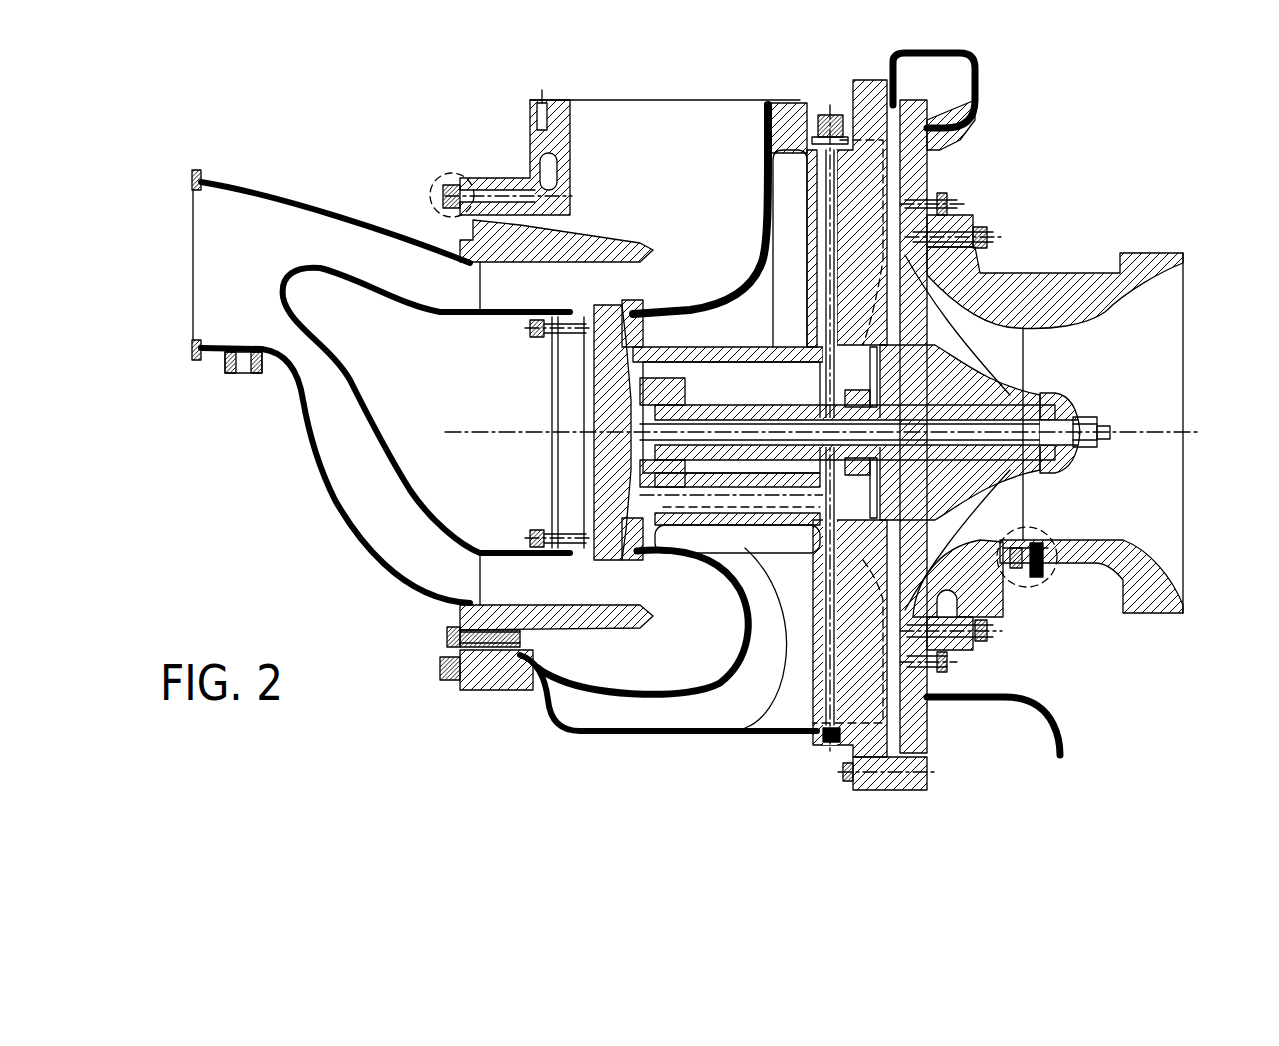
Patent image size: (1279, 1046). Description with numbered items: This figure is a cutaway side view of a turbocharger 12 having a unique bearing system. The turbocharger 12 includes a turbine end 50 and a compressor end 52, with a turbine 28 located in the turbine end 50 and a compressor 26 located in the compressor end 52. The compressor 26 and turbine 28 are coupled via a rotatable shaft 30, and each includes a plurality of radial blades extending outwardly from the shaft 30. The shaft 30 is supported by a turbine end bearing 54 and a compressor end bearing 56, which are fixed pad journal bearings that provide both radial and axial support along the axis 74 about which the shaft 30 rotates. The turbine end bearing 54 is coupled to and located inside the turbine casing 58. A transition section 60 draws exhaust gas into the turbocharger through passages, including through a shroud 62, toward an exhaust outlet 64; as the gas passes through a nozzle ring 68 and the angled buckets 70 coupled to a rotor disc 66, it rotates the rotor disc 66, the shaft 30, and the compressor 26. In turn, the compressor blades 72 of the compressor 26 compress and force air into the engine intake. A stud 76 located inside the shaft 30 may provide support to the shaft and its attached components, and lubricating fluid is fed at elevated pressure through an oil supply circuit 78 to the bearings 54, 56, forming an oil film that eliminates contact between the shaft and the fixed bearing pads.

The turbocharger 12 is at (1070, 145).
The compressor 26 is at (957, 363).
The turbine 28 is at (590, 455).
The rotatable shaft 30 is at (797, 465).
The turbine end 50 is at (557, 752).
The compressor end 52 is at (1032, 632).
The turbine end bearing 54 is at (670, 397).
The compressor end bearing 56 is at (827, 375).
The turbine casing 58 is at (788, 350).
The transition section 60 is at (300, 217).
The shroud 62 is at (596, 244).
The exhaust outlet 64 is at (648, 113).
The rotor disc 66 is at (597, 388).
The nozzle ring 68 is at (573, 592).
The buckets 70 is at (612, 590).
The compressor blades 72 is at (1013, 490).
The axis 74 is at (1175, 433).
The stud 76 is at (1057, 428).
The oil supply circuit 78 is at (723, 500).